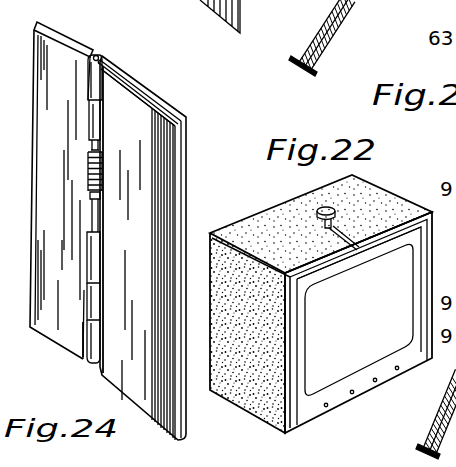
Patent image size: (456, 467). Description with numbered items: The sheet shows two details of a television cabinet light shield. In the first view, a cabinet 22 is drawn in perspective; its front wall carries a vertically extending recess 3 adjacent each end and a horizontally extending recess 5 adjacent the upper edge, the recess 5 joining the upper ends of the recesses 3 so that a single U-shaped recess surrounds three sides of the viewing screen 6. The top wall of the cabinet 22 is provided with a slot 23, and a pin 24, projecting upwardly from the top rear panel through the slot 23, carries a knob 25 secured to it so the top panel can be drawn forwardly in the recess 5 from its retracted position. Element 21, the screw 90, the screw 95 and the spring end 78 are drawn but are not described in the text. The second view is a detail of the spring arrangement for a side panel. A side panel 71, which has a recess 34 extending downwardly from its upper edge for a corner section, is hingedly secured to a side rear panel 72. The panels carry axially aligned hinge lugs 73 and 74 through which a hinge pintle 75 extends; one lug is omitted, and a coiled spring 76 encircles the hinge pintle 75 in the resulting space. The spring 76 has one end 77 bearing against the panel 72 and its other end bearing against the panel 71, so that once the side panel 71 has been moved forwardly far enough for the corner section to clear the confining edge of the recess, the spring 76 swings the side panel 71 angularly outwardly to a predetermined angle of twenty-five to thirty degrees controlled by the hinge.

In FIG. 22, the box 21 is at (246, 224).
In FIG. 22, the cabinet 22 is at (404, 194).
In FIG. 22, the slot 23 is at (346, 232).
In FIG. 22, the pin 24 is at (323, 226).
In FIG. 22, the knob 25 is at (350, 193).
In FIG. 22, the vertically extending recess 3 is at (427, 290).
In FIG. 22, the horizontally extending recess 5 is at (382, 243).
In FIG. 22, the viewing screen 6 is at (366, 332).
In FIG. 22, the screw 90 is at (300, 74).
In FIG. 22, the screw 95 is at (418, 455).
In FIG. 24, the recess 34 is at (146, 99).
In FIG. 24, the side panel 71 is at (186, 150).
In FIG. 24, the side rear panel 72 is at (47, 324).
In FIG. 24, the hinge lug 73 is at (92, 73).
In FIG. 24, the hinge lug 74 is at (90, 114).
In FIG. 24, the hinge pintle 75 is at (92, 147).
In FIG. 24, the coiled spring 76 is at (103, 178).
In FIG. 24, the spring end 77 is at (86, 184).
In FIG. 24, the spring end 78 is at (100, 144).